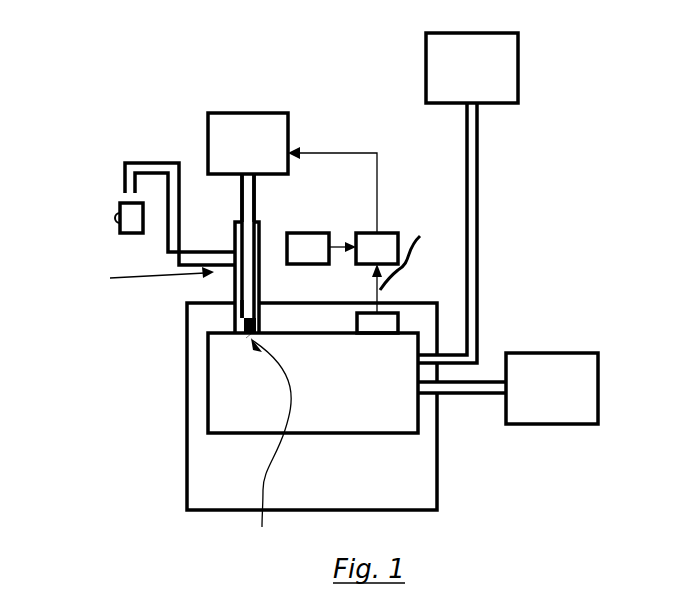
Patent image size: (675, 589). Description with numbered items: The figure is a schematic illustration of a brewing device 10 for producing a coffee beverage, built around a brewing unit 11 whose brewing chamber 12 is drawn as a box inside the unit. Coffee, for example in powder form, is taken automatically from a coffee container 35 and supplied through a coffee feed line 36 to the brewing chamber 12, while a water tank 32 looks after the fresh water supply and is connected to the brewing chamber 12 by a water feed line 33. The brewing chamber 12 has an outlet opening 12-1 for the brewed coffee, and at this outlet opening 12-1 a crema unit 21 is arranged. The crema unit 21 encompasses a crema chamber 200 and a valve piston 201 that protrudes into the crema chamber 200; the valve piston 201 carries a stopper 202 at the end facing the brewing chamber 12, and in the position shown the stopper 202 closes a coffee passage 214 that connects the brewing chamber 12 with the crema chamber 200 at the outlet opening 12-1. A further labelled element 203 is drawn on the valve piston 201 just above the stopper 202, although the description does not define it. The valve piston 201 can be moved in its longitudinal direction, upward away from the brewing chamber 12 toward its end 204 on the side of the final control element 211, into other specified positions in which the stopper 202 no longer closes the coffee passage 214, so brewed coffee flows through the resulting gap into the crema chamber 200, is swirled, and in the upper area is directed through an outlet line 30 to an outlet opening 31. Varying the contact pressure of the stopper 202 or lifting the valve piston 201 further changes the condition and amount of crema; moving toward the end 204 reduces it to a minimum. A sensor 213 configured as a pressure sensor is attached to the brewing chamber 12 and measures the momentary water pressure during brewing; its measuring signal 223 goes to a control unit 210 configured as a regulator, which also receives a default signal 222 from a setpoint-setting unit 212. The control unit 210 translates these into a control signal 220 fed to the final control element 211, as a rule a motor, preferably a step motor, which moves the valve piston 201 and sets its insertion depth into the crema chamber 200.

The brewing device 10 is at (478, 534).
The brewing unit 11 is at (220, 457).
The brewing chamber 12 is at (217, 395).
The outlet opening 12-1 is at (271, 445).
The crema unit 21 is at (149, 278).
The outlet line 30 is at (150, 166).
The outlet opening 31 is at (128, 192).
The water tank 32 is at (557, 365).
The water feed line 33 is at (473, 387).
The coffee container 35 is at (447, 75).
The coffee feed line 36 is at (473, 214).
The crema chamber 200 is at (261, 296).
The valve piston 201 is at (247, 270).
The stopper 202 is at (243, 331).
The outlet 203 is at (243, 318).
The end on the side of the final control element 204 is at (245, 173).
The control unit 210 is at (380, 245).
The final control element 211 is at (238, 122).
The setpoint-setting unit 212 is at (298, 245).
The sensor 213 is at (385, 320).
The coffee passage 214 is at (246, 338).
The control signal 220 is at (338, 153).
The default signal 222 is at (332, 245).
The measuring signal 223 is at (419, 255).